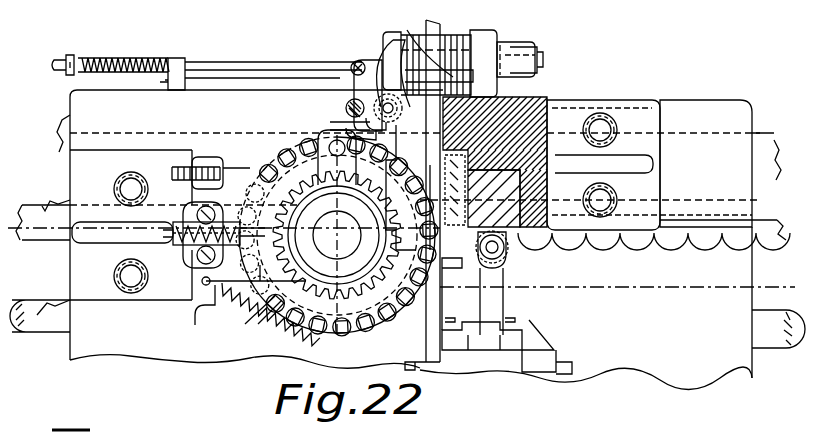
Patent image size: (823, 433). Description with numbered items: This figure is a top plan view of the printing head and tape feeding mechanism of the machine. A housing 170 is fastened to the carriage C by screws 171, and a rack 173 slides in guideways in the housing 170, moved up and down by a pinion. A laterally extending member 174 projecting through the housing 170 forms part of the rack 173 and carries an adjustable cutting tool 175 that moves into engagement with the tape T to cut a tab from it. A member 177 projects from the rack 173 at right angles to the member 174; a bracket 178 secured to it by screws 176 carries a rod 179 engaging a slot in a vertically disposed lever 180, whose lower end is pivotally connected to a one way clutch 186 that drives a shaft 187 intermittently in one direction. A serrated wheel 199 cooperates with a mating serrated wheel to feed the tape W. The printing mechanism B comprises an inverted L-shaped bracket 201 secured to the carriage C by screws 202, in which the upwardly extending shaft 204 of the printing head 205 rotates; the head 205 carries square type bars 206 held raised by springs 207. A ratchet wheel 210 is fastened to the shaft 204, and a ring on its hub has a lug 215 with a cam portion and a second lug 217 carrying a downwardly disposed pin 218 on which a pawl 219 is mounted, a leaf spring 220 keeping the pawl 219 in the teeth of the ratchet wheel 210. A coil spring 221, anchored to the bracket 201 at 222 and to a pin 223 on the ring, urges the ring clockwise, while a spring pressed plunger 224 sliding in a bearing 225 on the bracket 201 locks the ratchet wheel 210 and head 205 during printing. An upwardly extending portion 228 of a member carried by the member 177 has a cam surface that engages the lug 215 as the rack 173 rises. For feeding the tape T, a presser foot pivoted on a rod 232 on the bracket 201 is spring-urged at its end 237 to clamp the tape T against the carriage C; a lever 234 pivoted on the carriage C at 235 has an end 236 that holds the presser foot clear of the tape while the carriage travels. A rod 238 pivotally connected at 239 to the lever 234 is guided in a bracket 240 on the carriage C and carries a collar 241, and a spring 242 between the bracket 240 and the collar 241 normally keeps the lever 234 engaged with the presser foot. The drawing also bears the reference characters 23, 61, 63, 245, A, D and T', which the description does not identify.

The section line 23 is at (13, 235).
The shaft 61 is at (45, 297).
The frame member 63 is at (66, 118).
The housing 170 is at (560, 108).
The screws 171 is at (602, 128).
The rack 173 is at (594, 128).
The laterally extending member 174 is at (505, 266).
The cutting tool 175 is at (516, 261).
The screws 176 is at (408, 187).
The member 177 is at (588, 190).
The bracket 178 is at (388, 60).
The rod 179 is at (452, 77).
The vertically disposed lever 180 is at (494, 48).
The one way clutch 186 is at (542, 44).
The shaft 187 is at (542, 60).
The serrated wheel 199 is at (470, 36).
The inverted L-shaped bracket 201 is at (200, 188).
The screws 202 is at (132, 172).
The shaft 204 is at (337, 236).
The printing head 205 is at (438, 298).
The type bars 206 is at (367, 326).
The springs 207 is at (318, 330).
The ratchet wheel 210 is at (390, 316).
The projecting lug 215 is at (438, 283).
The second lug 217 is at (325, 153).
The pin 218 is at (310, 150).
The pawl 219 is at (318, 140).
The leaf spring 220 is at (320, 150).
The coil spring 221 is at (255, 297).
The spring attachment point 222 is at (212, 290).
The pin 223 is at (306, 320).
The spring pressed plunger 224 is at (241, 170).
The bearing 225 is at (195, 263).
The upwardly extending portion 228 is at (438, 268).
The rod 232 is at (239, 158).
The lever 234 is at (350, 106).
The pivot 235 is at (340, 120).
The lever end 236 is at (410, 135).
The presser foot end 237 is at (360, 86).
The rod 238 is at (245, 74).
The pivotal connection 239 is at (350, 68).
The bearing or bracket 240 is at (182, 62).
The collar 241 is at (90, 48).
The spring 242 is at (137, 62).
The pivot 245 is at (392, 109).
The block A is at (531, 107).
The printing mechanism B is at (263, 141).
The carriage C is at (719, 108).
The base D is at (556, 353).
The tape T is at (654, 254).
The shaft T' is at (43, 232).
The tape W is at (435, 321).